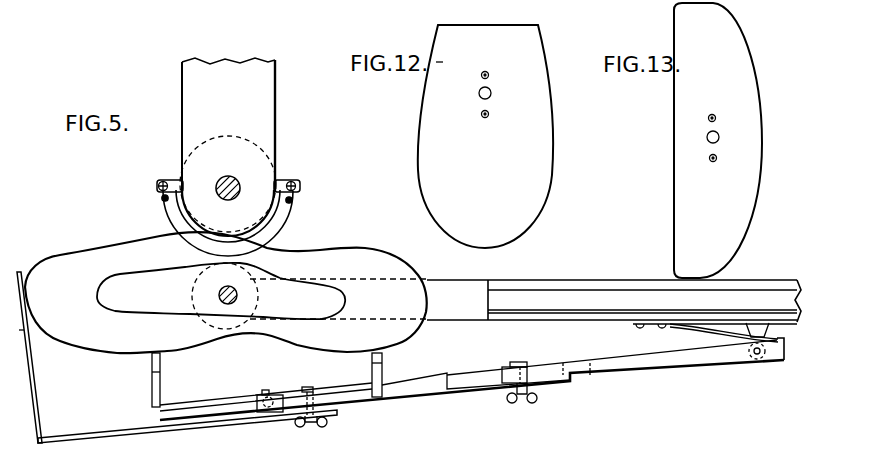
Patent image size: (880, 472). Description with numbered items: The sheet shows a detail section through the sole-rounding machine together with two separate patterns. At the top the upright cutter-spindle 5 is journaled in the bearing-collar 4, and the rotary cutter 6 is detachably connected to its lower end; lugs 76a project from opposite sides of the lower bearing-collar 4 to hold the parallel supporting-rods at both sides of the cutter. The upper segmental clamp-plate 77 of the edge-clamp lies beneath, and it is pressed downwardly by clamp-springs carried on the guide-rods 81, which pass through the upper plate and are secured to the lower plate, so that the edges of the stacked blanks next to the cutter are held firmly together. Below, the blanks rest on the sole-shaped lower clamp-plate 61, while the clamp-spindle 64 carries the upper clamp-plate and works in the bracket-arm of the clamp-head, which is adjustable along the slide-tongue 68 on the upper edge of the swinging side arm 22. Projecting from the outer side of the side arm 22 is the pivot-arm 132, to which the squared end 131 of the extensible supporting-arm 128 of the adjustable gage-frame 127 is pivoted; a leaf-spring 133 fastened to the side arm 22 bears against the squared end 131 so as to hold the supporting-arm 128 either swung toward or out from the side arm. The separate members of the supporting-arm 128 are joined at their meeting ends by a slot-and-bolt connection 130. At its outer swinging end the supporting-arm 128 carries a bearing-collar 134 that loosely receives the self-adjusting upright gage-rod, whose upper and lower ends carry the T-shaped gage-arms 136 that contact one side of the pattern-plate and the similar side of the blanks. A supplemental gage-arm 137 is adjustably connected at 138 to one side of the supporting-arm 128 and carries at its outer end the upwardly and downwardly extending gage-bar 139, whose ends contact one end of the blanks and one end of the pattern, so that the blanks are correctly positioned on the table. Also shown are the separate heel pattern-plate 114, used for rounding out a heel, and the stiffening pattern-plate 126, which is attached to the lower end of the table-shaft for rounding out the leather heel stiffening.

In FIG. 5, the bearing-collar 4 is at (265, 128).
In FIG. 5, the cutter-spindle 5 is at (236, 177).
In FIG. 5, the rotary cutter 6 is at (277, 172).
In FIG. 5, the lugs 76a is at (309, 182).
In FIG. 5, the guide-rods 81 is at (165, 201).
In FIG. 5, the upper segmental clamp-plate 77 is at (189, 237).
In FIG. 5, the clamp-spindle 64 is at (237, 295).
In FIG. 5, the lower clamp-plate 61 is at (221, 291).
In FIG. 5, the swinging side arm 22 is at (475, 278).
In FIG. 5, the slide-tongue 68 is at (597, 300).
In FIG. 5, the leaf-spring 133 is at (710, 337).
In FIG. 5, the pivot-arm 132 is at (755, 358).
In FIG. 5, the squared end 131 is at (776, 353).
In FIG. 5, the supporting-arm 128 is at (472, 380).
In FIG. 5, the slot-and-bolt connection 130 is at (509, 373).
In FIG. 5, the adjustable gage-frame 127 is at (322, 384).
In FIG. 5, the T-shaped gage-arms 136 is at (161, 376).
In FIG. 5, the bearing-collar 134 is at (265, 393).
In FIG. 5, the adjustable connection 138 is at (317, 428).
In FIG. 5, the supplemental gage-arm 137 is at (190, 430).
In FIG. 5, the gage-bar 139 is at (38, 350).
In FIG. 12, the heel pattern-plate 114 is at (540, 172).
In FIG. 13, the stiffening pattern-plate 126 is at (718, 140).